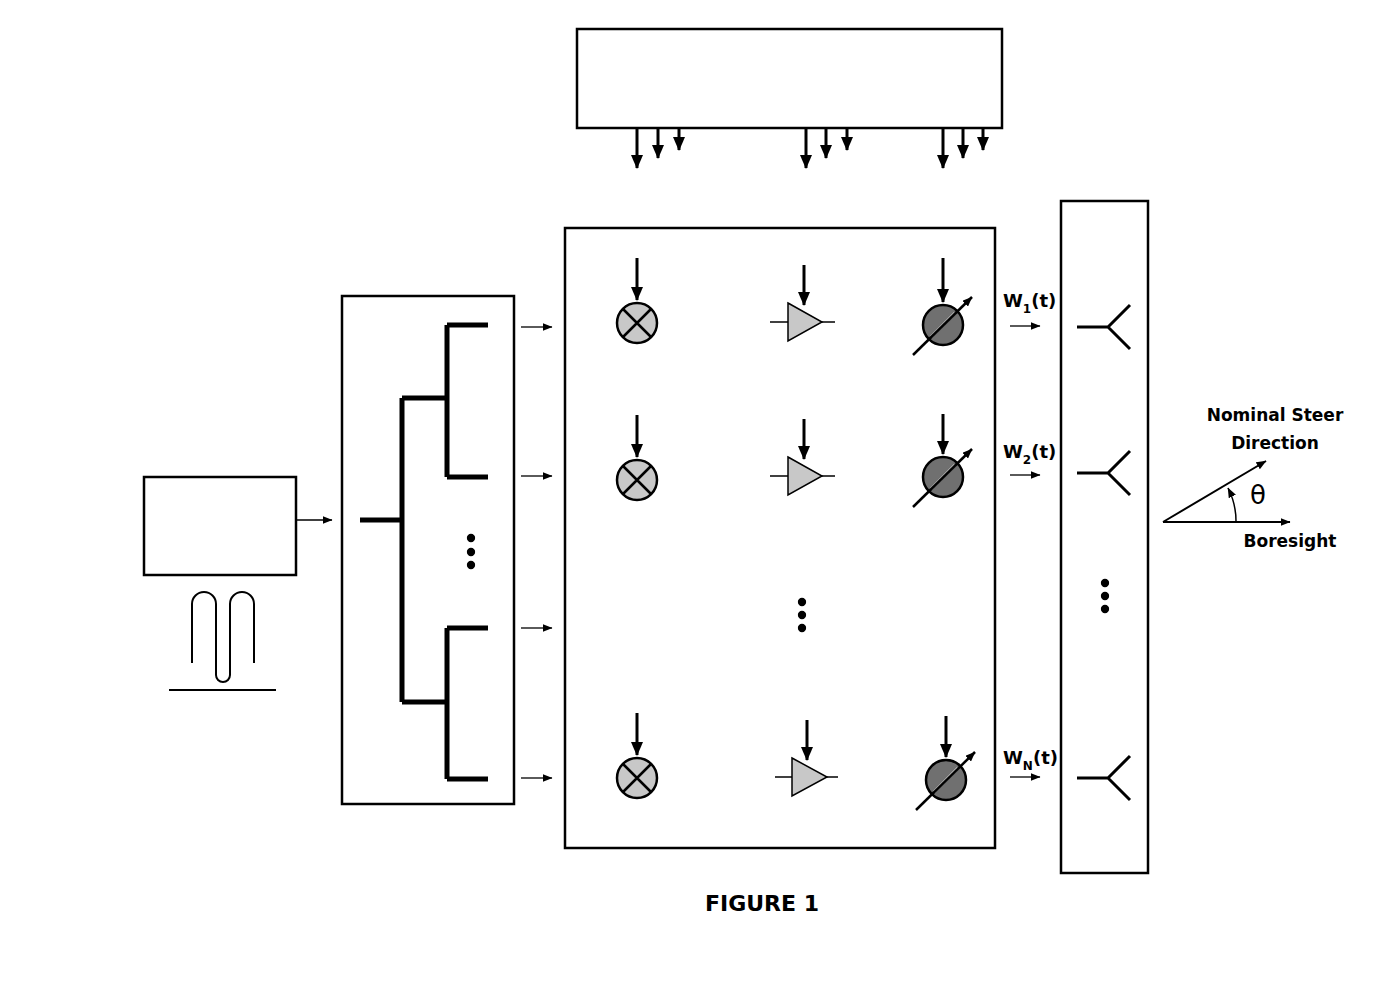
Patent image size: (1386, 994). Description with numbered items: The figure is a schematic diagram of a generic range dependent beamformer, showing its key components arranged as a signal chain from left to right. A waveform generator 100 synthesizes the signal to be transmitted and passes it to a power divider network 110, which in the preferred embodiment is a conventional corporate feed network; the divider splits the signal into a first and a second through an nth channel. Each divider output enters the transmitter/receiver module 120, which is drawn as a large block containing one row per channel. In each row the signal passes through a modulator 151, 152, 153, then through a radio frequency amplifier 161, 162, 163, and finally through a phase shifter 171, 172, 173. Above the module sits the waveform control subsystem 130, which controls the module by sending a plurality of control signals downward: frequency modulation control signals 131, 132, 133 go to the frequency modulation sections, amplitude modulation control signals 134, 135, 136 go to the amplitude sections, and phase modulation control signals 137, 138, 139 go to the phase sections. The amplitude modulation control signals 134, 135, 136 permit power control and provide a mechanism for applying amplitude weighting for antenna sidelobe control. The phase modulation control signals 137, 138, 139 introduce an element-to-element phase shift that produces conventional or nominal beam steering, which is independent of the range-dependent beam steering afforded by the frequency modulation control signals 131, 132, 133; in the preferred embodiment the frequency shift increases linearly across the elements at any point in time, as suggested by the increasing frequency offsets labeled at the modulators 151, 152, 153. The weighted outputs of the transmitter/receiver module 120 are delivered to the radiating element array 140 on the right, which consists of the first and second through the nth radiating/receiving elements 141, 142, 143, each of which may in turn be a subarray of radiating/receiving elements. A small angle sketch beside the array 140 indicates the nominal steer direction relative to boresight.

The waveform generator 100 is at (217, 470).
The power divider network 110 is at (417, 292).
The transmitter/receiver module 120 is at (590, 855).
The waveform control subsystem 130 is at (568, 128).
The frequency modulation control signal 131 is at (620, 172).
The frequency modulation control signal 132 is at (650, 173).
The frequency modulation control signal 133 is at (675, 160).
The amplitude modulation control signal 134 is at (789, 172).
The amplitude modulation control signal 135 is at (818, 173).
The amplitude modulation control signal 136 is at (843, 160).
The phase modulation control signal 137 is at (926, 172).
The phase modulation control signal 138 is at (955, 173).
The phase modulation control signal 139 is at (980, 160).
The radiating element array 140 is at (1133, 198).
The radiating/receiving element 141 is at (1115, 303).
The radiating/receiving element 142 is at (1115, 449).
The radiating/receiving element 143 is at (1116, 757).
The modulator 151 is at (620, 305).
The modulator 152 is at (620, 462).
The modulator 153 is at (620, 762).
The radio frequency amplifier 161 is at (786, 346).
The radio frequency amplifier 162 is at (786, 500).
The radio frequency amplifier 163 is at (788, 801).
The phase shifter 171 is at (937, 348).
The phase shifter 172 is at (937, 500).
The phase shifter 173 is at (940, 803).